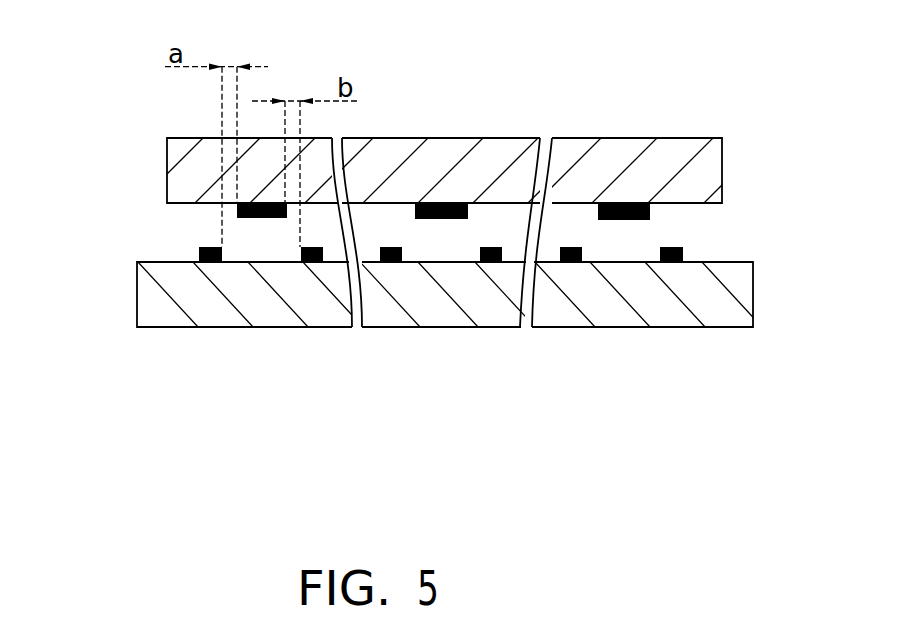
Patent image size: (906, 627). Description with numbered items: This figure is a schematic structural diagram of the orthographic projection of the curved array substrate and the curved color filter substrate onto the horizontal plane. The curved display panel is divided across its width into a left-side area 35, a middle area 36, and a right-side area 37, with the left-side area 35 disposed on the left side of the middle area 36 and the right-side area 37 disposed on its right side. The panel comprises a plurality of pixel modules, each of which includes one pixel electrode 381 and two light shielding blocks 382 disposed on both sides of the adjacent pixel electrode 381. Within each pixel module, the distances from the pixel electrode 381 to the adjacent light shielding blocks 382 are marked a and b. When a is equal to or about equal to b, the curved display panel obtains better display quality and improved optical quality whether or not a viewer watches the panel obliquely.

The left-side area 35 is at (143, 345).
The middle area 36 is at (491, 345).
The right-side area 37 is at (691, 347).
The pixel electrode 381 is at (260, 218).
The light shielding block 382 is at (207, 263).